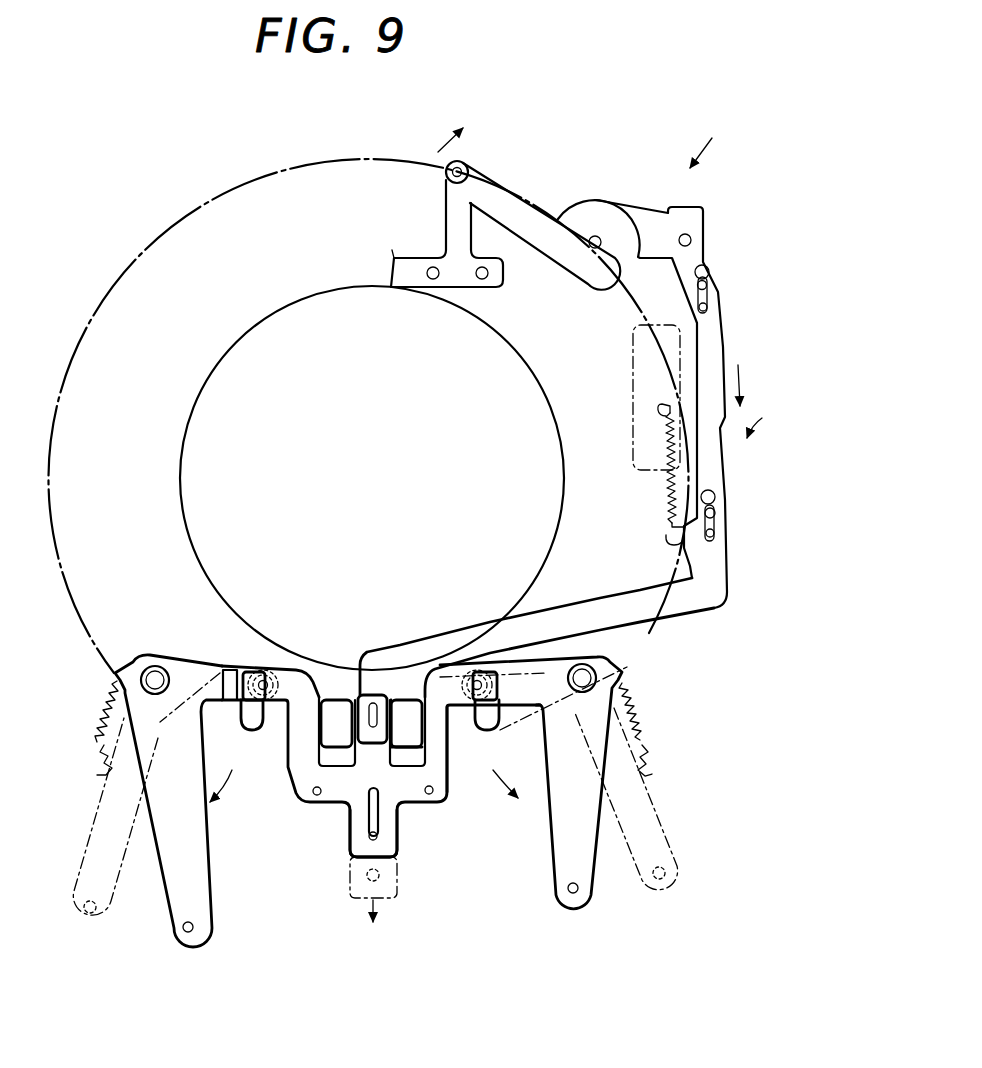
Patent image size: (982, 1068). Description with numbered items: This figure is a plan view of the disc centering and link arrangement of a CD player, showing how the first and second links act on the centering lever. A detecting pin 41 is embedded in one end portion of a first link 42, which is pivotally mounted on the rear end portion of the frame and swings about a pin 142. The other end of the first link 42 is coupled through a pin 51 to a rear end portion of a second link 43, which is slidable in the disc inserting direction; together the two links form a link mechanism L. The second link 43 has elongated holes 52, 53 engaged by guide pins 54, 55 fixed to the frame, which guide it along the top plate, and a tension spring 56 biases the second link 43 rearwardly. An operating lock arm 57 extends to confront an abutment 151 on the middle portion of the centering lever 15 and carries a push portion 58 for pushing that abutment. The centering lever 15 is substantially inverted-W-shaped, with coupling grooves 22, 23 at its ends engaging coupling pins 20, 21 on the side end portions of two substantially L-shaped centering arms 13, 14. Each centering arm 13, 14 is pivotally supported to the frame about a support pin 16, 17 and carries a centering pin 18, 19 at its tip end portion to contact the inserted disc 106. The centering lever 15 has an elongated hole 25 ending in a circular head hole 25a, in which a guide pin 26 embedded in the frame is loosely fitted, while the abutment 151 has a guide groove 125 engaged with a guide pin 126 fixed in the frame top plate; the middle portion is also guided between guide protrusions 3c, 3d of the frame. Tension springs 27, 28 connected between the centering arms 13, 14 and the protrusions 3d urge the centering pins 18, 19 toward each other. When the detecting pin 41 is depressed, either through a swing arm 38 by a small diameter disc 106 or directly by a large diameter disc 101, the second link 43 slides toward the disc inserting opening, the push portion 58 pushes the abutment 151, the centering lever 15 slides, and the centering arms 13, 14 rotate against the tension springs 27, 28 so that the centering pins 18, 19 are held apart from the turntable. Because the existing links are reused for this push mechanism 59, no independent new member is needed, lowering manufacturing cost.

The large diameter disc 101 is at (190, 214).
The disc 106 is at (540, 378).
The swing arm 38 is at (468, 228).
The detecting pin 41 is at (473, 170).
The first link 42 is at (513, 192).
The pin 142 is at (598, 236).
The link mechanism L is at (711, 140).
The second link 43 is at (712, 355).
The pin 51 is at (692, 236).
The guide pin 54 is at (712, 270).
The elongated hole 52 is at (708, 305).
The guide pin 55 is at (718, 502).
The elongated hole 53 is at (718, 531).
The tension spring 56 is at (667, 487).
The operating lock arm 57 is at (597, 606).
The push mechanism 59 is at (764, 401).
The centering lever 15 is at (313, 685).
The abutment 151 is at (452, 768).
The guide protrusion 3c is at (335, 700).
The guide groove 125 is at (365, 695).
The guide pin 126 is at (395, 698).
The push portion 58 is at (371, 703).
The centering arm 14 is at (199, 866).
The centering pin 19 is at (193, 926).
The support pin 17 is at (155, 665).
The centering arm 13 is at (660, 833).
The centering pin 18 is at (575, 893).
The support pin 16 is at (600, 672).
The tension spring 28 is at (98, 700).
The tension spring 27 is at (642, 712).
The guide protrusion 3d is at (100, 768).
The coupling pin 21 is at (263, 676).
The coupling groove 22 is at (490, 734).
The coupling groove 23 is at (237, 737).
The coupling pin 20 is at (478, 680).
The elongated hole 25 is at (368, 815).
The circular head hole 25a is at (370, 837).
The guide pin 26 is at (397, 852).